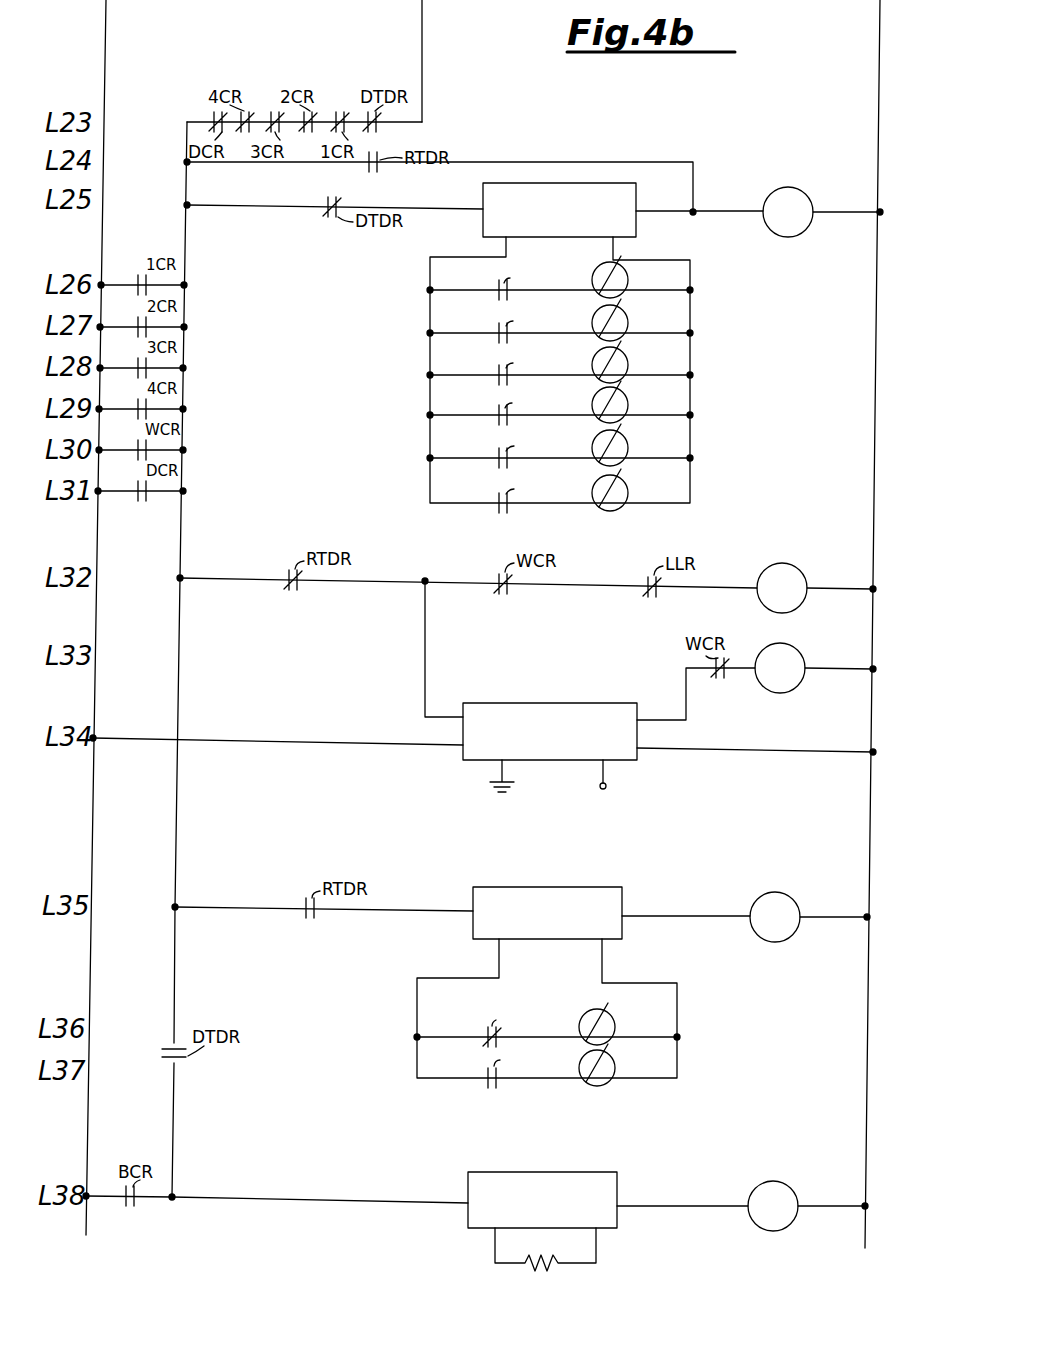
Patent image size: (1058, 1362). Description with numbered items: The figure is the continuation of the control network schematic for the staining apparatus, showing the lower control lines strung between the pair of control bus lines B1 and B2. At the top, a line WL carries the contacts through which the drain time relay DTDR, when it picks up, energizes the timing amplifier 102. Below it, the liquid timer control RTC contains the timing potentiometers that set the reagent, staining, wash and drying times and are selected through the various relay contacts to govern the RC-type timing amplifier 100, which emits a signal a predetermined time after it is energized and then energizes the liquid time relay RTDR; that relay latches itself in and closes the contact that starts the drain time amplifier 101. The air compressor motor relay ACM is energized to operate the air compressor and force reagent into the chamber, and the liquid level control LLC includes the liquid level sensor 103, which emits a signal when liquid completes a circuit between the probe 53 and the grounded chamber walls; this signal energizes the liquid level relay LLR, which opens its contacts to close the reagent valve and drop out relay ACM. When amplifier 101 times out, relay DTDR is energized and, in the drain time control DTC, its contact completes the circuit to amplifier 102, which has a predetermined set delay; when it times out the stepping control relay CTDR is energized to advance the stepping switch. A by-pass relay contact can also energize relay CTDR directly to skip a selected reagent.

The timing amplifier 100 is at (637, 222).
The drain time amplifier 101 is at (625, 895).
The timing amplifier 102 is at (576, 1175).
The liquid level sensor 103 is at (548, 703).
The probe 53 is at (601, 791).
The liquid timer control RTC is at (698, 368).
The drain time control DTC is at (704, 993).
The liquid level control LLC is at (684, 784).
The liquid time relay RTDR is at (788, 212).
The drain time relay DTDR is at (775, 917).
The stepping control relay CTDR is at (773, 1206).
The air compressor motor relay ACM is at (782, 588).
The liquid level relay LLR is at (780, 668).
The control bus line B1 is at (107, 55).
The control bus line B2 is at (878, 62).
The line WL is at (423, 48).